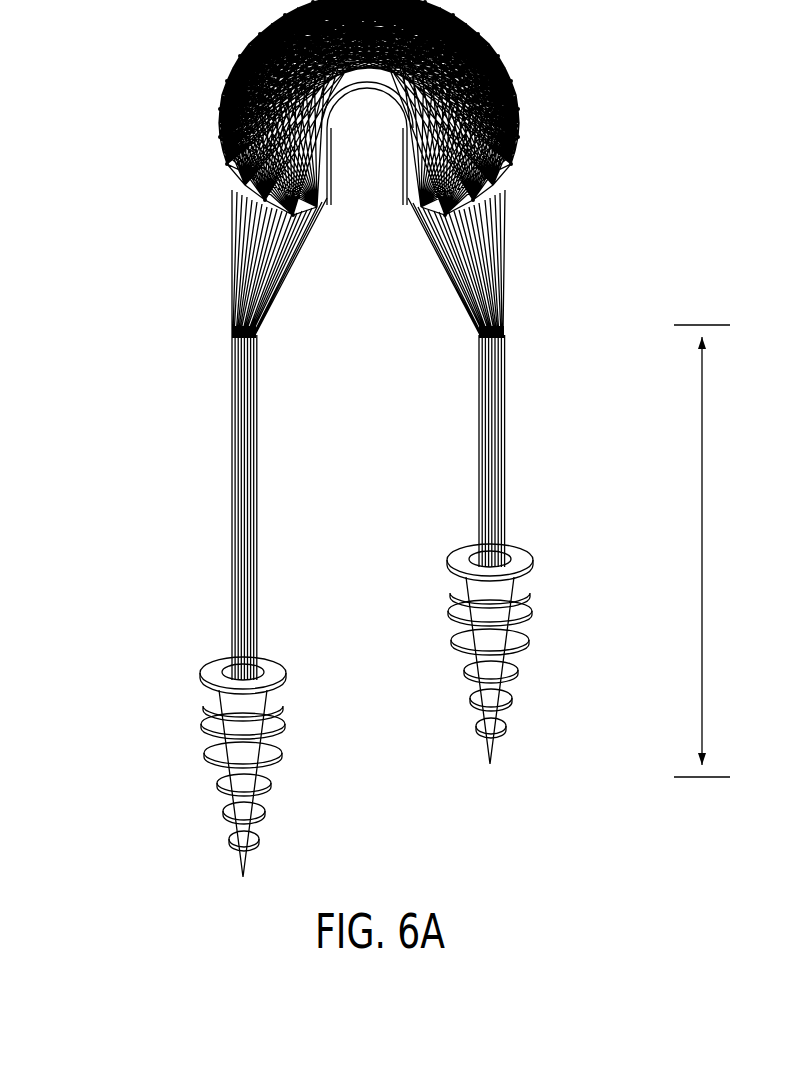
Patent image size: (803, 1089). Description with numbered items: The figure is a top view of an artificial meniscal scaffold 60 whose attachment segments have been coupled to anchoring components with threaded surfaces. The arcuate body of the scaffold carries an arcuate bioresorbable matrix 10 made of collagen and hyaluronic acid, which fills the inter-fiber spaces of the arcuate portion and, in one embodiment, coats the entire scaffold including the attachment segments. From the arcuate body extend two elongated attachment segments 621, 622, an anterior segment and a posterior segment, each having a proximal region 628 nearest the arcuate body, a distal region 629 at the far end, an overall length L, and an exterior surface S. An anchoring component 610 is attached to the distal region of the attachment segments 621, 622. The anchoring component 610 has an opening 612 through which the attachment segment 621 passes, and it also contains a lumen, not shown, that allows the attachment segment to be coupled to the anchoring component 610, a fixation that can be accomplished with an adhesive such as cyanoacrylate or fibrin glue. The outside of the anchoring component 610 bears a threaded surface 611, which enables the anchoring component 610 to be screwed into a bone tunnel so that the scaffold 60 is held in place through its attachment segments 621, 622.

The arcuate bioresorbable matrix 10 is at (370, 92).
The artificial meniscal scaffold 60 is at (105, 414).
The exterior surface S is at (228, 625).
The length L is at (702, 568).
The anchoring component 610 is at (178, 765).
The threaded surface 611 is at (214, 774).
The opening 612 is at (266, 658).
The attachment segment 621 is at (220, 551).
The attachment segment 622 is at (470, 440).
The proximal region 628 is at (276, 336).
The distal region 629 is at (299, 614).